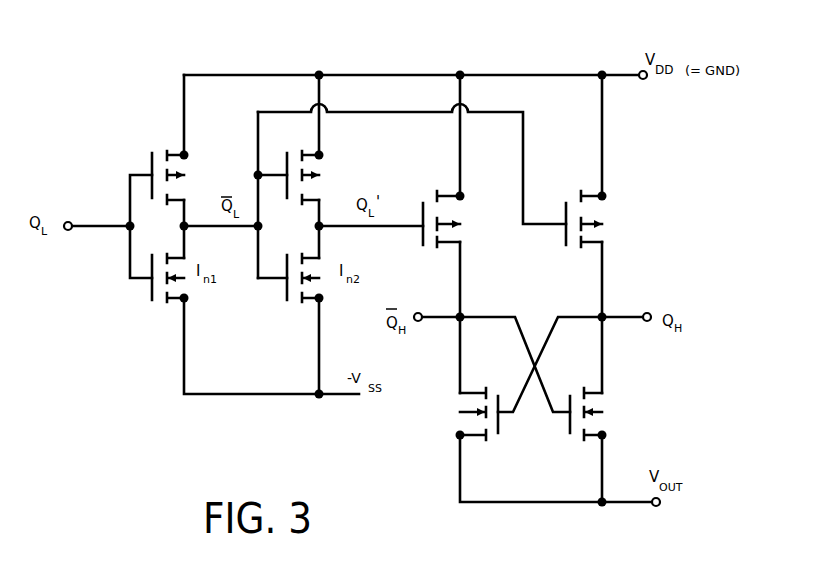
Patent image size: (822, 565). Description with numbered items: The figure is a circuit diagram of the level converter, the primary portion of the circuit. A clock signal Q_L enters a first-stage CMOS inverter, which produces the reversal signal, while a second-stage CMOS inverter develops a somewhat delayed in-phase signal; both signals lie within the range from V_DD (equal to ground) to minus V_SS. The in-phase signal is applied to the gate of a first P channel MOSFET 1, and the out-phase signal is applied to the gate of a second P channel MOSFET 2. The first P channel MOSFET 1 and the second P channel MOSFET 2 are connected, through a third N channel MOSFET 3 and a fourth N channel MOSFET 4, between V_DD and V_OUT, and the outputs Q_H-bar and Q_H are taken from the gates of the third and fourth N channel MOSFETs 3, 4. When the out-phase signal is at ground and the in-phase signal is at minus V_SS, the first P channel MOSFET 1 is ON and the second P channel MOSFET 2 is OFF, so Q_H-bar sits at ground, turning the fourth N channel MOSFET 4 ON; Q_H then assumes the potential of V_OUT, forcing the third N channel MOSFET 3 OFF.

The first P channel MOSFET 1 is at (467, 223).
The second P channel MOSFET 2 is at (612, 224).
The third N channel MOSFET 3 is at (462, 411).
The fourth N channel MOSFET 4 is at (613, 412).